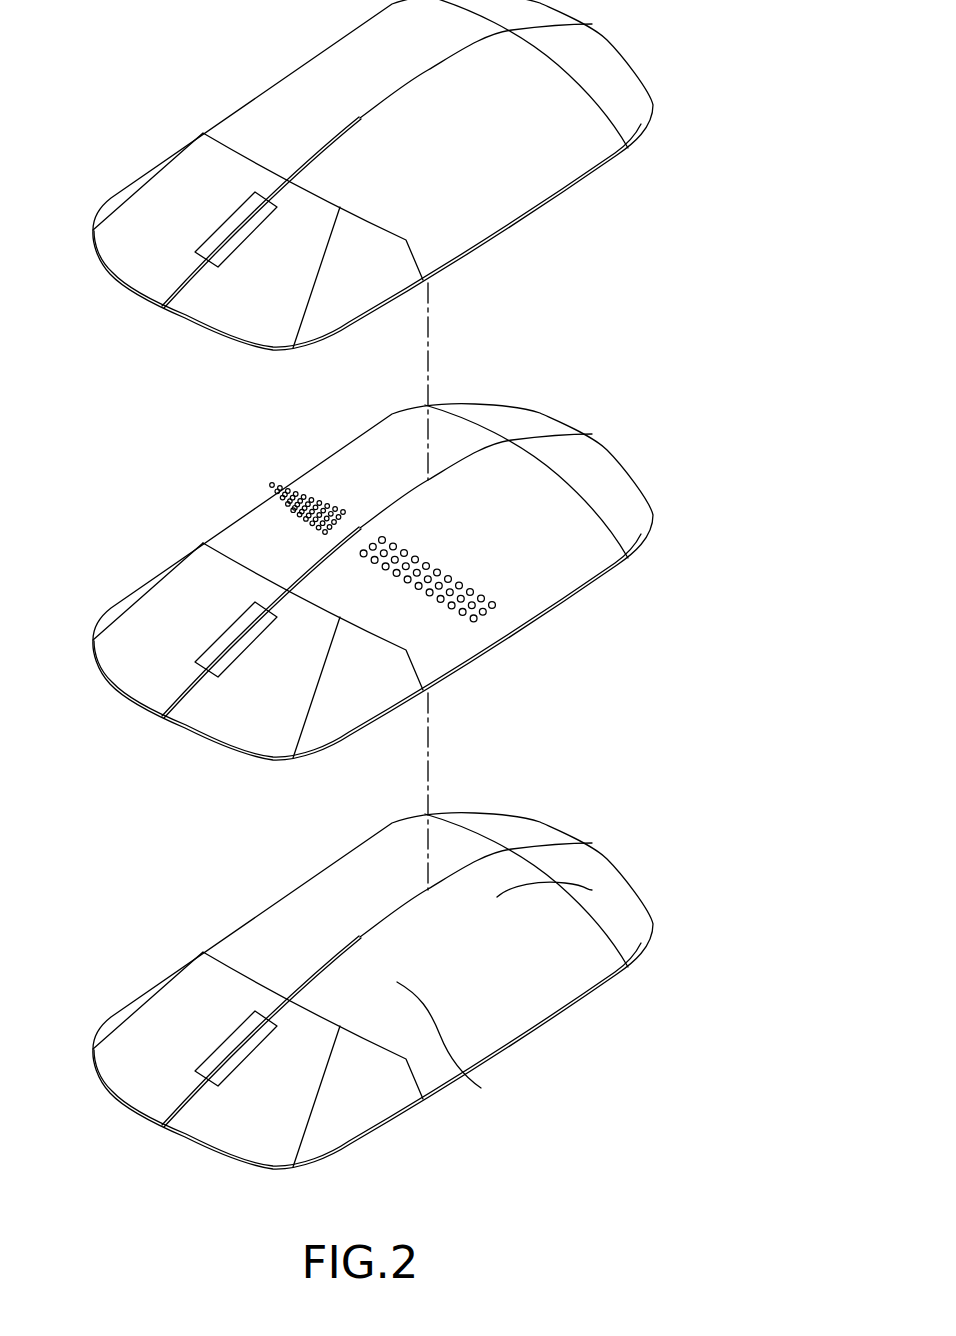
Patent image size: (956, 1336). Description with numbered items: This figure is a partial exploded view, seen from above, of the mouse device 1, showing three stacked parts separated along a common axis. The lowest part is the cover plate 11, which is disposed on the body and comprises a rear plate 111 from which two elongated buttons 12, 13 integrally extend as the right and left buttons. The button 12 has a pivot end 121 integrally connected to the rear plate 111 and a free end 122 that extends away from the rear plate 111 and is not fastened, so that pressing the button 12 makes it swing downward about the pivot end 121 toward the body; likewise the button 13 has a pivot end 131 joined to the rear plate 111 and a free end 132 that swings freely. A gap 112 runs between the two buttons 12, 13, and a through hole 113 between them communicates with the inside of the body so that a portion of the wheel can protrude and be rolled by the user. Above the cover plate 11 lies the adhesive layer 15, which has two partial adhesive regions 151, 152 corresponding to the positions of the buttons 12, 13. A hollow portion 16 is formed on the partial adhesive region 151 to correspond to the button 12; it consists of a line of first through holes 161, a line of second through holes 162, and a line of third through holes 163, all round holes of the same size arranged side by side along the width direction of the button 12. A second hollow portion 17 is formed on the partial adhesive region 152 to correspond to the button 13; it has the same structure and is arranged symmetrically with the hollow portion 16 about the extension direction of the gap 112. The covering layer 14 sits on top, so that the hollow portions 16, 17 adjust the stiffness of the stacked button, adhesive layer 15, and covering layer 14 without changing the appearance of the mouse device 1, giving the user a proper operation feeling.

The mouse device 1 is at (103, 90).
The cover plate 11 is at (579, 1001).
The rear plate 111 is at (592, 890).
The gap 112 is at (190, 1093).
The through hole 113 is at (247, 1037).
The button 12 is at (363, 1120).
The pivot end 121 is at (481, 1088).
The free end 122 is at (218, 1155).
The button 13 is at (190, 983).
The pivot end 131 is at (313, 910).
The free end 132 is at (117, 1101).
The covering layer 14 is at (322, 90).
The adhesive layer 15 is at (619, 459).
The partial adhesive region 151 is at (283, 703).
The partial adhesive region 152 is at (187, 607).
The hollow portion 16 is at (498, 618).
The first through holes 161 is at (430, 563).
The second through holes 162 is at (420, 589).
The third through holes 163 is at (368, 558).
The hollow portion 17 is at (270, 483).